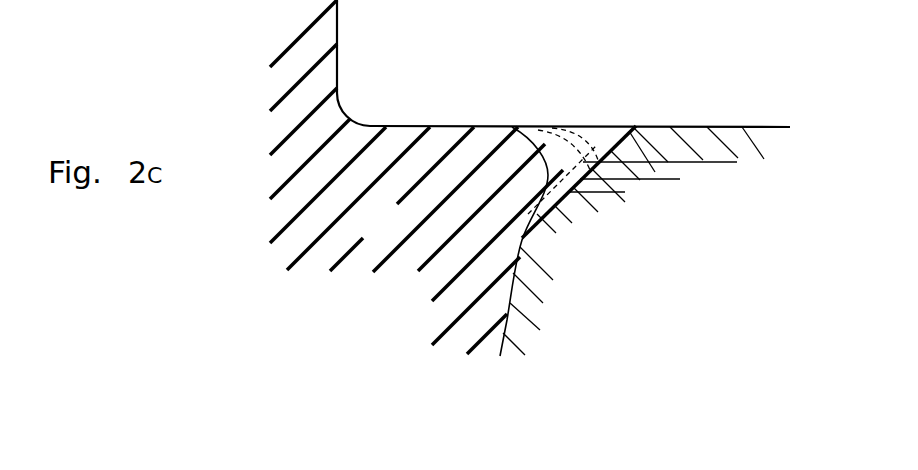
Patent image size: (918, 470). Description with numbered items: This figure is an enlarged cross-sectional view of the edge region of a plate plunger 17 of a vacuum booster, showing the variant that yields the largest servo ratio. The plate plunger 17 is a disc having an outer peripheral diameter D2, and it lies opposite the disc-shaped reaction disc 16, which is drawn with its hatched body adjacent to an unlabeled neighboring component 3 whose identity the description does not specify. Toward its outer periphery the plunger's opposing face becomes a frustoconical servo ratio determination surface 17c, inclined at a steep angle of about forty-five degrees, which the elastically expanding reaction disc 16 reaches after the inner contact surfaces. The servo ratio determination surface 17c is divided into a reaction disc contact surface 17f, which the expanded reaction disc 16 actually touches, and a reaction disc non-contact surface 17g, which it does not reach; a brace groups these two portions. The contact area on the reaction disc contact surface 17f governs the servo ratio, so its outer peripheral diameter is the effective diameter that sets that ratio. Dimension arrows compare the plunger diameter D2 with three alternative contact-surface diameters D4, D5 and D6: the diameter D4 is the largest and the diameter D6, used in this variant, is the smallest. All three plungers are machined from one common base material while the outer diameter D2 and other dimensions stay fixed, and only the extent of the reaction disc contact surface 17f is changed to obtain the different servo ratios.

The base member 3 is at (462, 86).
The reaction disc 16 is at (400, 231).
The plate plunger 17 is at (592, 356).
The servo ratio determination surface 17c is at (607, 62).
The reaction disc contact surface 17f is at (539, 162).
The reaction disc non-contact surface 17g is at (597, 150).
The outer peripheral diameter of the plate plunger D2 is at (782, 128).
The outer peripheral diameter of the reaction disc contact surface D4 is at (725, 163).
The outer peripheral diameter of the reaction disc contact surface D5 is at (670, 180).
The outer peripheral diameter of the reaction disc contact surface D6 is at (614, 193).